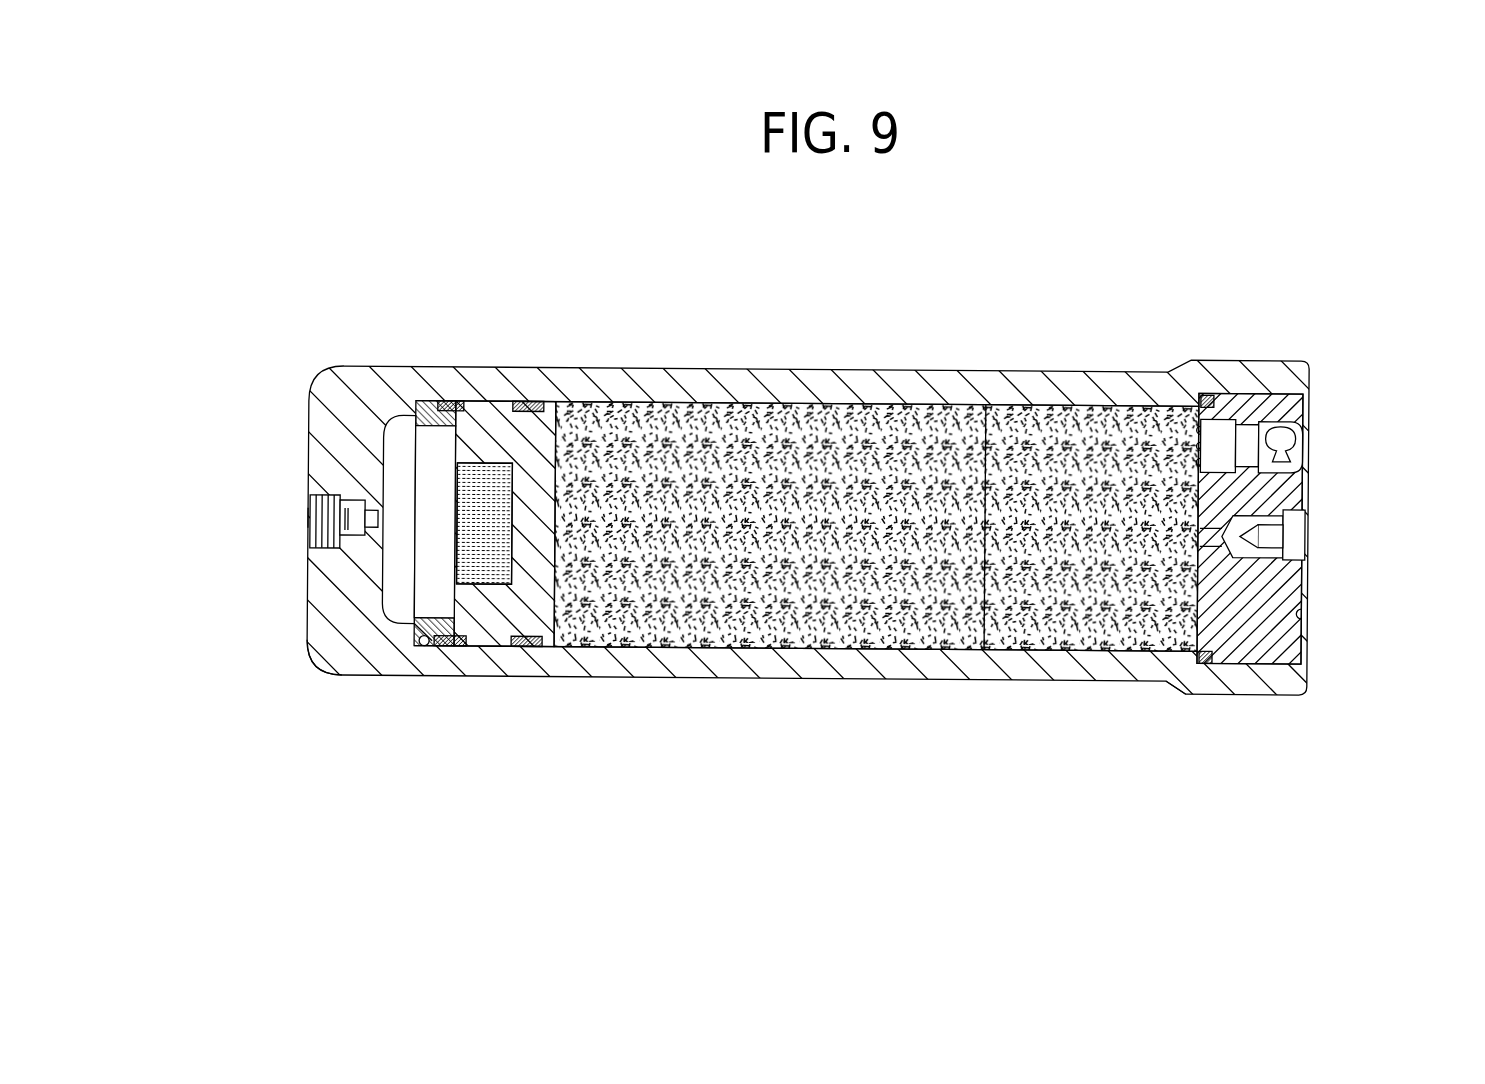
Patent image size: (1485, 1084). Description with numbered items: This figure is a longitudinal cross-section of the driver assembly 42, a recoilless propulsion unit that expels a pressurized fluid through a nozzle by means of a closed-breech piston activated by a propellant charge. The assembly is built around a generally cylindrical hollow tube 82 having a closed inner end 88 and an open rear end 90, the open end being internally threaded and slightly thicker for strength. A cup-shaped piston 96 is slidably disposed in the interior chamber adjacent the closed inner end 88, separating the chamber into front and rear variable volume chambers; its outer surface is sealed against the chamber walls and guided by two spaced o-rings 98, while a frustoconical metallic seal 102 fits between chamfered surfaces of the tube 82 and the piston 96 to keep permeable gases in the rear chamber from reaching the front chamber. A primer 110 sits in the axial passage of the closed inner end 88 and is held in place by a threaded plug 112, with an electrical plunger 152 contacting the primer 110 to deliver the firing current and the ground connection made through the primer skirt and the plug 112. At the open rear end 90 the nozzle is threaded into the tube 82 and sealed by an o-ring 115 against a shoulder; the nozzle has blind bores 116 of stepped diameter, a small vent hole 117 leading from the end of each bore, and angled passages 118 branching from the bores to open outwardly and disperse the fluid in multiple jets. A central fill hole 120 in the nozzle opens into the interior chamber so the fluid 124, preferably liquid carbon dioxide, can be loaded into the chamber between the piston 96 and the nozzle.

The driver assembly 42 is at (1057, 298).
The tube 82 is at (725, 380).
The closed inner end 88 is at (323, 640).
The open rear end 90 is at (1265, 692).
The cup-shaped piston 96 is at (495, 410).
The o-rings 98 is at (527, 642).
The metallic seal 102 is at (427, 413).
The primer 110 is at (348, 497).
The threaded plug 112 is at (320, 532).
The o-ring 115 is at (1183, 690).
The blind bores 116 is at (1222, 423).
The vent hole 117 is at (1305, 447).
The angled passages 118 is at (1307, 408).
The central fill hole 120 is at (1305, 553).
The fluid 124 is at (813, 610).
The electrical plunger 152 is at (305, 517).